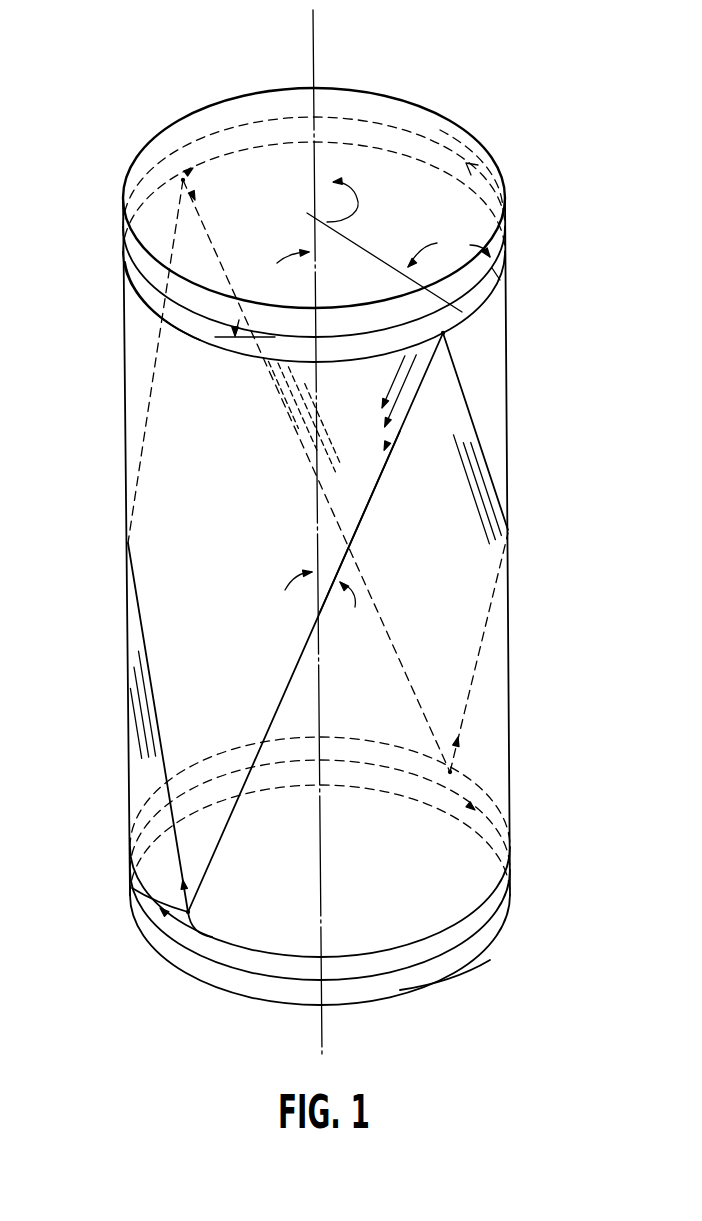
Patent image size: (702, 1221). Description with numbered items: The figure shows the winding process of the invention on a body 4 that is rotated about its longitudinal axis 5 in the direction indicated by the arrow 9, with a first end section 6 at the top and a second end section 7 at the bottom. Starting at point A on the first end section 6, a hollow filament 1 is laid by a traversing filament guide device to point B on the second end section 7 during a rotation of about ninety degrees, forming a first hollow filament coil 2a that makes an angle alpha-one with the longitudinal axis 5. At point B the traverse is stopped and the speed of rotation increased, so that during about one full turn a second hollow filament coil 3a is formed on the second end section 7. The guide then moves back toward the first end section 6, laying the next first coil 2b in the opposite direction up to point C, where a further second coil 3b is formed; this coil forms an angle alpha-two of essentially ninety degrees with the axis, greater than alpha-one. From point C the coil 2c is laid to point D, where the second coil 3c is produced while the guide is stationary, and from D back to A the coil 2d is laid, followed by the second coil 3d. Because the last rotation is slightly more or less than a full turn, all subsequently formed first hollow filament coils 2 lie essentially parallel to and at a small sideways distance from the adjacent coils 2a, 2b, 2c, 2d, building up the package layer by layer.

The hollow filament 1 is at (372, 503).
The first hollow filament coils 2 is at (393, 400).
The first hollow filament coil 2a is at (357, 532).
The first hollow filament coil 2b is at (137, 607).
The first hollow filament coil 2c is at (400, 652).
The first hollow filament coil 2d is at (468, 408).
The second hollow filament coil 3a is at (160, 905).
The second hollow filament coil 3b is at (490, 153).
The second hollow filament coil 3c is at (463, 947).
The second hollow filament coil 3d is at (178, 305).
The body 4 is at (163, 518).
The longitudinal axis 5 is at (315, 57).
The first end section 6 is at (497, 272).
The second end section 7 is at (495, 937).
The arrow 9 is at (357, 200).
The point A is at (443, 333).
The point B is at (195, 930).
The point C is at (138, 157).
The point D is at (456, 772).